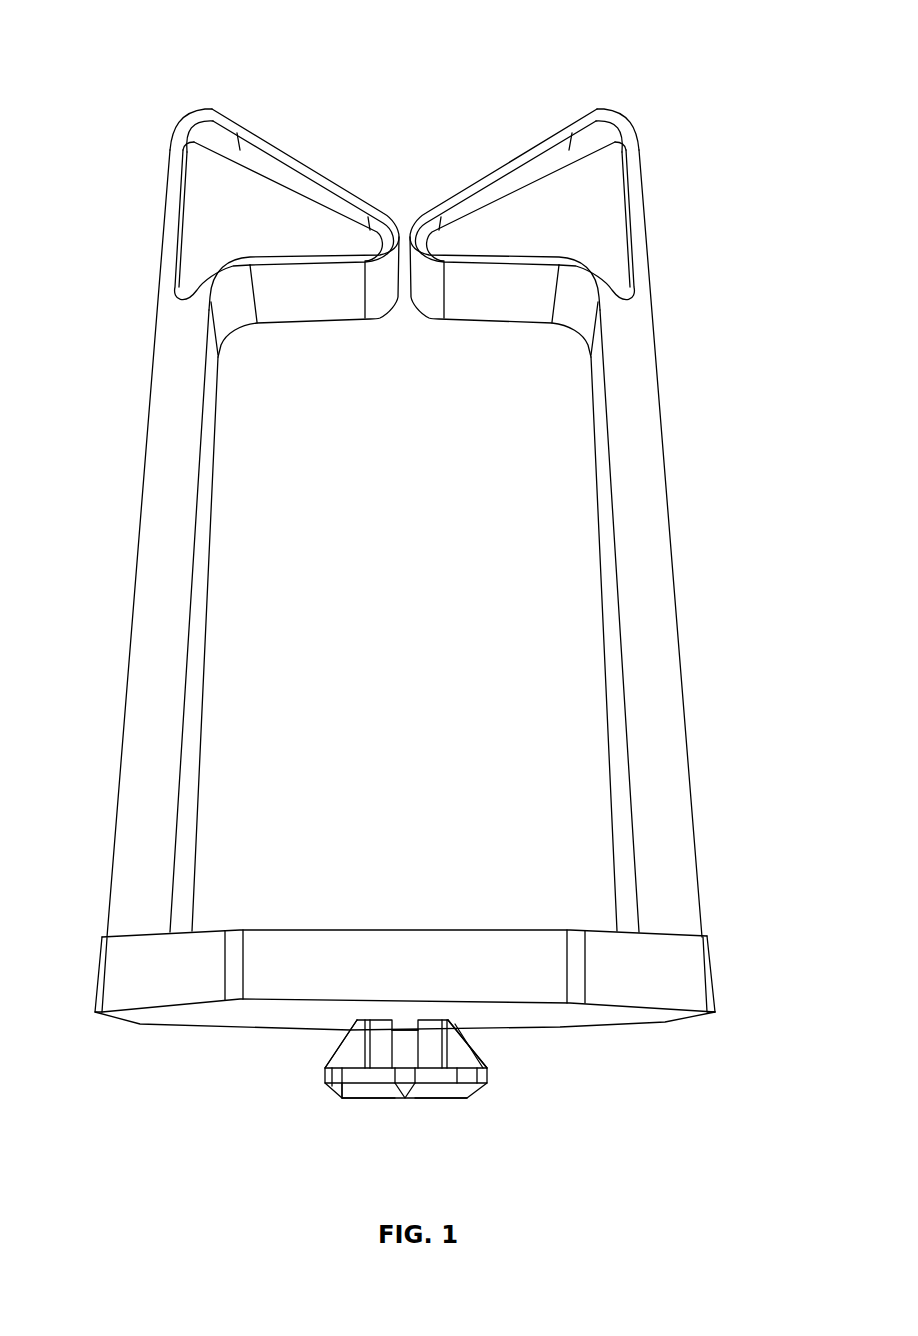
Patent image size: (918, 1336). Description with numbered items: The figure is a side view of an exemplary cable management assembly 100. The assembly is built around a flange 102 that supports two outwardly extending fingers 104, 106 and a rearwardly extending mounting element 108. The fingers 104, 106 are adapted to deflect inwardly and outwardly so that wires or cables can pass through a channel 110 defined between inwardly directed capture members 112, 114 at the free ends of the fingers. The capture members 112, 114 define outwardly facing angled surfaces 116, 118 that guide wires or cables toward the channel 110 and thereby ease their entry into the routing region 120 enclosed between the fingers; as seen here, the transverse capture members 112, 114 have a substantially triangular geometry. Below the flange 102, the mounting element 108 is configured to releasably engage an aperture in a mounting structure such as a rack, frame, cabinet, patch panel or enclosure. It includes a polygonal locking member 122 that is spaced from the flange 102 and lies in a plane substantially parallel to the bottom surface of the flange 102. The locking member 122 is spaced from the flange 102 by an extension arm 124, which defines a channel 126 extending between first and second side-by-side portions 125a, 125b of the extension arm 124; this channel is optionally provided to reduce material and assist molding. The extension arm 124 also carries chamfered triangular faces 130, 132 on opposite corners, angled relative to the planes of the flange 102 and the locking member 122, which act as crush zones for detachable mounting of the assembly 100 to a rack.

The cable management assembly 100 is at (178, 45).
The flange 102 is at (115, 975).
The finger 104 is at (146, 628).
The finger 106 is at (663, 635).
The mounting element 108 is at (406, 1027).
The channel 110 is at (402, 197).
The capture member 112 is at (284, 215).
The capture member 114 is at (524, 215).
The angled surface 116 is at (223, 118).
The angled surface 118 is at (600, 114).
The routing region 120 is at (522, 521).
The polygonal locking member 122 is at (378, 1123).
The extension arm 124 is at (406, 990).
The first side-by-side portion 125a is at (349, 1092).
The second side-by-side portion 125b is at (458, 1092).
The channel 126 is at (405, 1047).
The chamfered triangular face 130 is at (340, 1052).
The chamfered triangular face 132 is at (484, 1066).